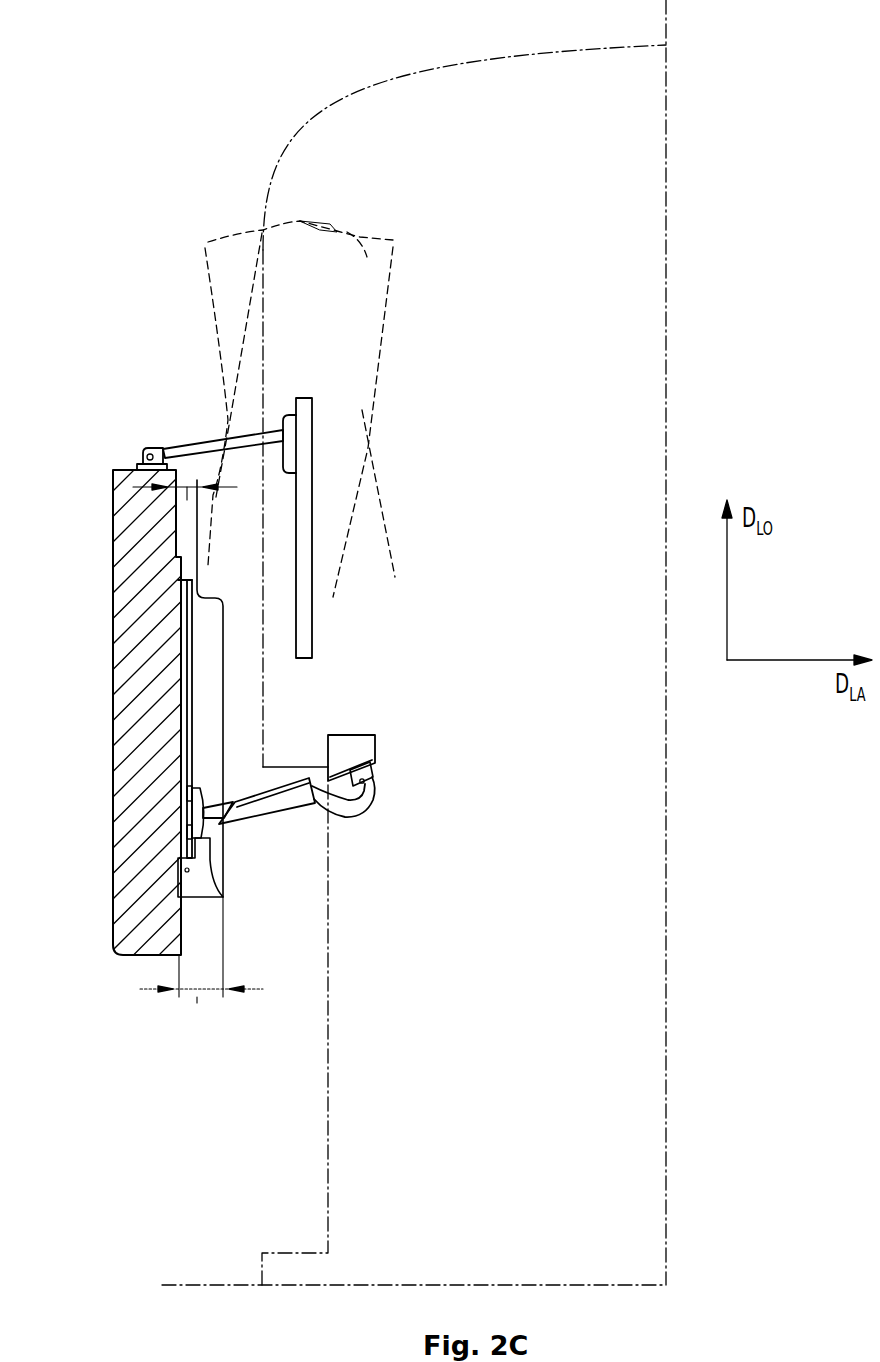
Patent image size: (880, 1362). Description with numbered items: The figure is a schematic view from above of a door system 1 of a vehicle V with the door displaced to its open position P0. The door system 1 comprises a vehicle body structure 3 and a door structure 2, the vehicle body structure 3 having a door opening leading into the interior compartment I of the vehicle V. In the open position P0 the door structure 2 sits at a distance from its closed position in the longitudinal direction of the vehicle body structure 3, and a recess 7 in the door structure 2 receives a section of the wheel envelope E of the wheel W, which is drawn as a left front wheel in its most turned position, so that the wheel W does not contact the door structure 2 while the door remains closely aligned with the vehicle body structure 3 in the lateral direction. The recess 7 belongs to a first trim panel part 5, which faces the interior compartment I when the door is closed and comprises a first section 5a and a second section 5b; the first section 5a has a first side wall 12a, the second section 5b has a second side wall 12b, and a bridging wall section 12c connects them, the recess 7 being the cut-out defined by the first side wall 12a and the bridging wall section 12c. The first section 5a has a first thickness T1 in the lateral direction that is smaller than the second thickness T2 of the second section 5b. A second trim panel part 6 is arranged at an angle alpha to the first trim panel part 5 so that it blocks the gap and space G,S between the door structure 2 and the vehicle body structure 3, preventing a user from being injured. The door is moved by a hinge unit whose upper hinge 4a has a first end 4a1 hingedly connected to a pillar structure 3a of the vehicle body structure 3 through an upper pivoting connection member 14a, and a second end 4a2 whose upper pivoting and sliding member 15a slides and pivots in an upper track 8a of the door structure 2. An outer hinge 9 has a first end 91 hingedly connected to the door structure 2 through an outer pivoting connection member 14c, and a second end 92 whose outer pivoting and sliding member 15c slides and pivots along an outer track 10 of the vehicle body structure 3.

The door system 1 is at (137, 368).
The door structure 2 is at (148, 642).
The vehicle body structure 3 is at (397, 135).
The pillar structure 3a is at (350, 752).
The upper hinge 4a is at (350, 817).
The first end of the upper hinge 4a1 is at (368, 806).
The second end of the upper hinge 4a2 is at (250, 810).
The first trim panel part 5 is at (203, 687).
The first section 5a is at (222, 515).
The second section 5b is at (240, 638).
The second trim panel part 6 is at (283, 803).
The recess 7 is at (167, 533).
The upper track 8a is at (185, 657).
The outer hinge 9 is at (220, 440).
The first end of the outer hinge 91 is at (170, 448).
The second end of the outer hinge 92 is at (228, 440).
The outer track 10 is at (222, 534).
The first side wall 12a is at (312, 527).
The second side wall 12b is at (240, 618).
The bridging wall section 12c is at (221, 585).
The upper pivoting connection member 14a is at (368, 779).
The outer pivoting connection member 14c is at (150, 456).
The upper pivoting and sliding member 15a is at (206, 832).
The outer pivoting and sliding member 15c is at (300, 440).
The wheel envelope E is at (157, 296).
The interior compartment I is at (472, 757).
The vehicle V is at (690, 53).
The wheel W is at (367, 257).
The open position P0 is at (757, 222).
The first thickness T1 is at (187, 500).
The second thickness T2 is at (201, 962).
The gap and space between door structure and vehicle body structure GS is at (232, 733).
The angle alpha is at (252, 779).